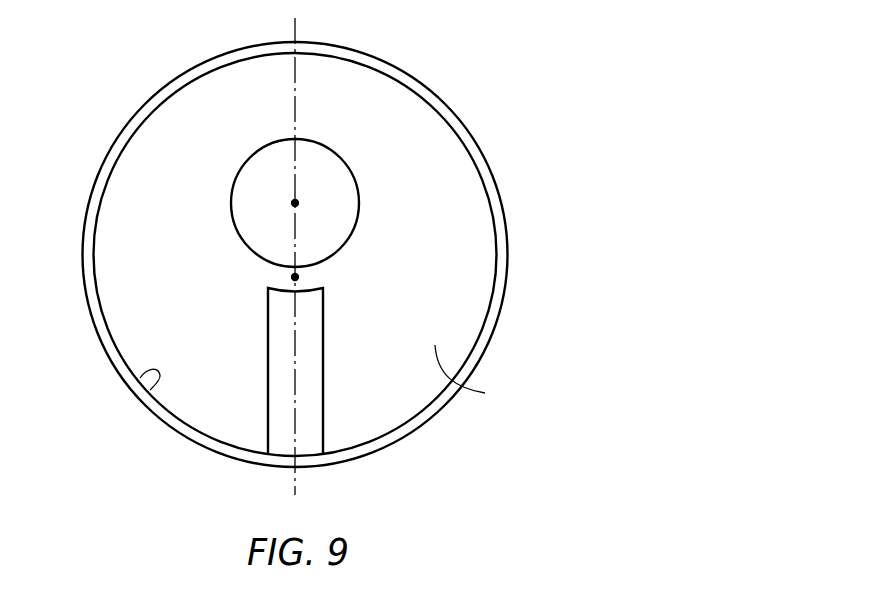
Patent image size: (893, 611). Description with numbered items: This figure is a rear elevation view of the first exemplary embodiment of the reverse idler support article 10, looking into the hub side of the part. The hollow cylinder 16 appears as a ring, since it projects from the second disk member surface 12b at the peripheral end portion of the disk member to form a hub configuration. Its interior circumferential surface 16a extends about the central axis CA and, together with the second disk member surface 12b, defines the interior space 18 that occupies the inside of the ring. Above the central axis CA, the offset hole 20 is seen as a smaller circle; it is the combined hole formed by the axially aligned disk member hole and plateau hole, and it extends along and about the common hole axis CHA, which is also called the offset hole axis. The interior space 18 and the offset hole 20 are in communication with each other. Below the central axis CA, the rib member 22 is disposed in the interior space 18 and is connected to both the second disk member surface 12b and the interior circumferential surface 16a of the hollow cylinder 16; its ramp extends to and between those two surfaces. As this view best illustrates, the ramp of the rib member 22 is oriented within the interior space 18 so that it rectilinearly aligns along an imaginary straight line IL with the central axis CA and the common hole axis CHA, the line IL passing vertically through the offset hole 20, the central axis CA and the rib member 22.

The reverse idler support article 10 is at (487, 70).
The hollow cylinder 16 is at (482, 140).
The interior circumferential surface 16a is at (140, 378).
The interior space 18 is at (183, 281).
The offset hole 20 is at (280, 233).
The rib member 22 is at (323, 403).
The second disk member surface 12b is at (478, 382).
The imaginary straight line IL is at (298, 97).
The common hole axis CHA is at (321, 190).
The central axis CA is at (295, 277).